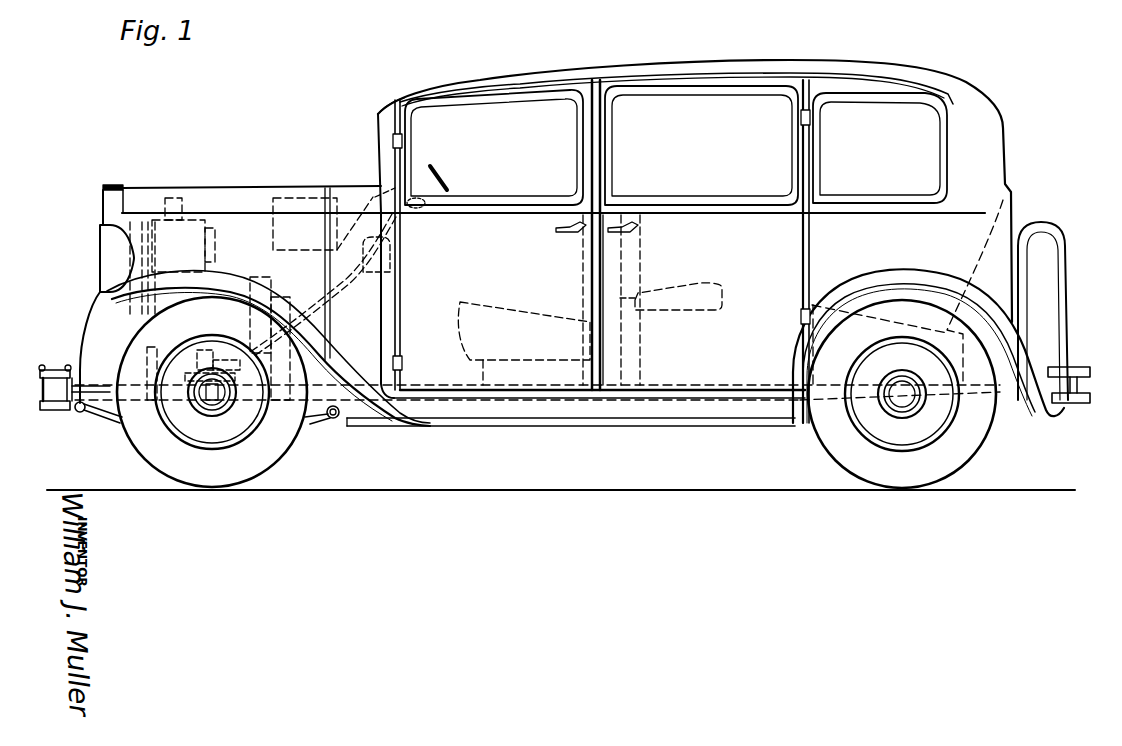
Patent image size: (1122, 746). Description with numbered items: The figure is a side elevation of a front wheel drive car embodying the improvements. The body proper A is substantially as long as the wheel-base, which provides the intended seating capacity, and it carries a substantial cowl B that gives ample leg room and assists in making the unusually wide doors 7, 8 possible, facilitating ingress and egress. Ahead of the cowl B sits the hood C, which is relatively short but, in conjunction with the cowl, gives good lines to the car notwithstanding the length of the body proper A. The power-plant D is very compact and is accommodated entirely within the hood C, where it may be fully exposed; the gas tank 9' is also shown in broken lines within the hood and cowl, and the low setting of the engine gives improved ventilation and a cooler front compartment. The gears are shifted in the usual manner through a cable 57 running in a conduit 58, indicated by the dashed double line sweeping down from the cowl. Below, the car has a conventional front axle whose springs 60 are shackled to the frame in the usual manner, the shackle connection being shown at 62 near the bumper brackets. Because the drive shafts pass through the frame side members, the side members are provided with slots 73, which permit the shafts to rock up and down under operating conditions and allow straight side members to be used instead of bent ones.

The door 7 is at (489, 240).
The door 8 is at (700, 235).
The control unit housing 9' is at (323, 223).
The cable 57 is at (310, 286).
The conduit 58 is at (337, 330).
The springs 60 is at (305, 422).
The shackle 62 is at (84, 412).
The slots 73 is at (207, 415).
The body proper A is at (678, 278).
The cowl B is at (366, 288).
The hood C is at (188, 257).
The power-plant D is at (218, 338).